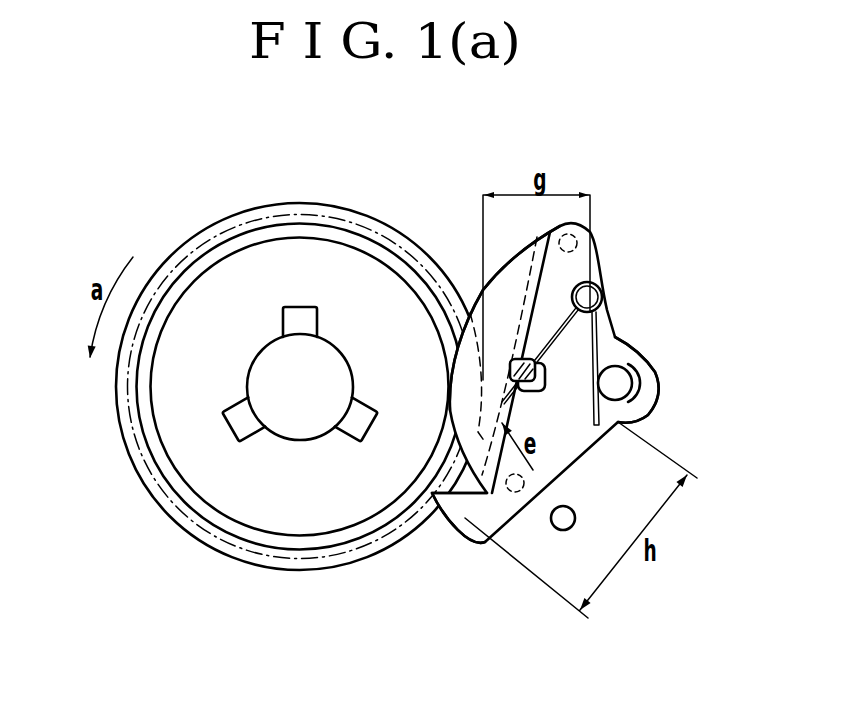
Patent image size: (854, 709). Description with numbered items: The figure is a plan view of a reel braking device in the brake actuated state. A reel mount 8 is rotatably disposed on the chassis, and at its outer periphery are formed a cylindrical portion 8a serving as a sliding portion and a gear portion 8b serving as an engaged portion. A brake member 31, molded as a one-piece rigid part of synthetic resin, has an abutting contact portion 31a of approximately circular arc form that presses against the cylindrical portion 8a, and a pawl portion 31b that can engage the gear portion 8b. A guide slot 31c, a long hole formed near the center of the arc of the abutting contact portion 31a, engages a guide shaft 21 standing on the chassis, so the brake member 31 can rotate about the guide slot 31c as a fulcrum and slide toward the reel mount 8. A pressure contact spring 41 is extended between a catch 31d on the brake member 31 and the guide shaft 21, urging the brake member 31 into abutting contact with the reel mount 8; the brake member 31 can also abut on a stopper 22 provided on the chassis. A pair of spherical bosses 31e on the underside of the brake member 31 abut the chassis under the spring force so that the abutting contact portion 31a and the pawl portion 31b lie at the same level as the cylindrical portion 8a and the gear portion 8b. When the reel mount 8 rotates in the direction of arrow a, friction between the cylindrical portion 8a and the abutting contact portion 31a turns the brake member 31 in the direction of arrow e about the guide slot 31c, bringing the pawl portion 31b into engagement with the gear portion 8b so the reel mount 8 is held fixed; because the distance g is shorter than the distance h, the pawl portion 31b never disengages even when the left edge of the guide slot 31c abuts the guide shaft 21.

The reel mount 8 is at (255, 273).
The cylindrical portion 8a is at (160, 453).
The gear portion 8b is at (173, 507).
The guide shaft 21 is at (620, 382).
The stopper 22 is at (576, 520).
The brake member 31 is at (577, 262).
The abutting contact portion 31a is at (480, 288).
The pawl portion 31b is at (448, 512).
The guide slot 31c is at (648, 397).
The catch 31d is at (545, 382).
The spherical bosses 31e is at (577, 238).
The pressure contact spring 41 is at (602, 333).